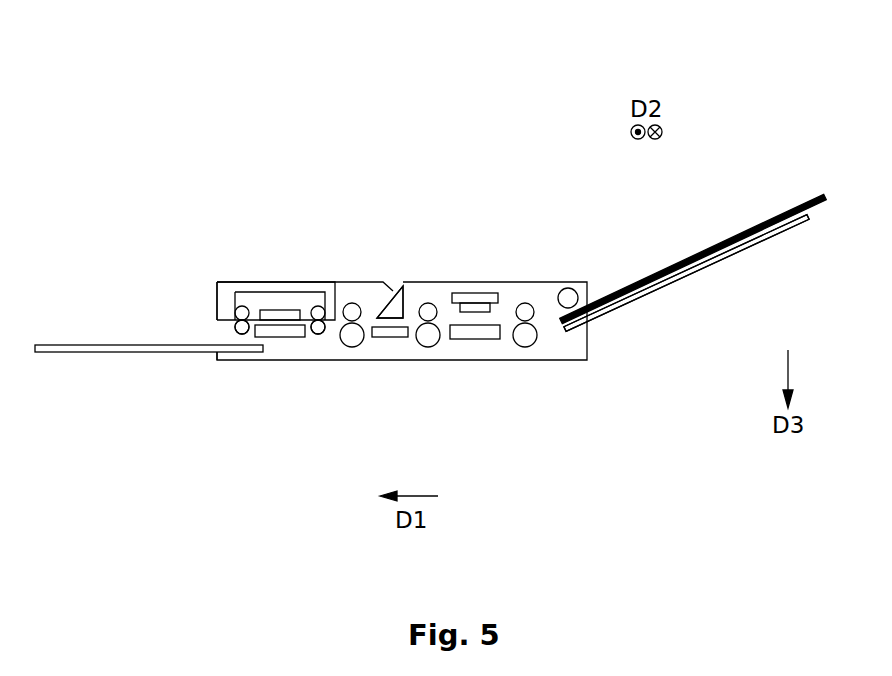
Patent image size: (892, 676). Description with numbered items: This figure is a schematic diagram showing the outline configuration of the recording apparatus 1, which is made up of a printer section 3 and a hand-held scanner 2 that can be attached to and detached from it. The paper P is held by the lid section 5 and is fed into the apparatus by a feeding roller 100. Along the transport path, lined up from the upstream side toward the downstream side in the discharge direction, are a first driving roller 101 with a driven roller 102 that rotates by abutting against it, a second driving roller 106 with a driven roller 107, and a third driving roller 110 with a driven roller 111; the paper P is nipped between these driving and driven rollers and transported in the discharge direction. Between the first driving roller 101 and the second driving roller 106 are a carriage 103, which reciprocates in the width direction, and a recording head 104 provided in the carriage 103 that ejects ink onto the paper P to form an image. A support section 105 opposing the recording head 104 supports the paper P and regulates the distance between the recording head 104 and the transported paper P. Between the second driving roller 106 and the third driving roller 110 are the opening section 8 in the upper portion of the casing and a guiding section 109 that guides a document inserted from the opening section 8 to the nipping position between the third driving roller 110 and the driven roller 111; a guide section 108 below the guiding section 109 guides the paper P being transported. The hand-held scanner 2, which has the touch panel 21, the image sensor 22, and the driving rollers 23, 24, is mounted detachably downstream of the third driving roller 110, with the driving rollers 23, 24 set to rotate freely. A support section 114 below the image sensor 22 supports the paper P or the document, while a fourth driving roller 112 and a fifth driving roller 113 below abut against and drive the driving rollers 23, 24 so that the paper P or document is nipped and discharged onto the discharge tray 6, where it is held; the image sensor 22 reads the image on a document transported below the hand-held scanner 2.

The recording apparatus 1 is at (538, 86).
The hand-held scanner 2 is at (208, 304).
The printer section 3 is at (604, 266).
The lid section 5 is at (638, 298).
The discharge tray 6 is at (100, 352).
The opening section 8 is at (375, 294).
The touch panel 21 is at (250, 287).
The image sensor 22 is at (282, 314).
The driving roller 23 is at (318, 310).
The driving roller 24 is at (238, 312).
The feeding roller 100 is at (567, 296).
The first driving roller 101 is at (525, 346).
The driven roller 102 is at (525, 308).
The carriage 103 is at (488, 297).
The recording head 104 is at (470, 306).
The support section 105 is at (475, 338).
The second driving roller 106 is at (428, 346).
The driven roller 107 is at (430, 308).
The guide section 108 is at (390, 336).
The guiding section 109 is at (392, 303).
The third driving roller 110 is at (351, 346).
The driven roller 111 is at (350, 308).
The fourth driving roller 112 is at (316, 334).
The fifth driving roller 113 is at (239, 334).
The support section 114 is at (275, 336).
The paper P is at (812, 192).